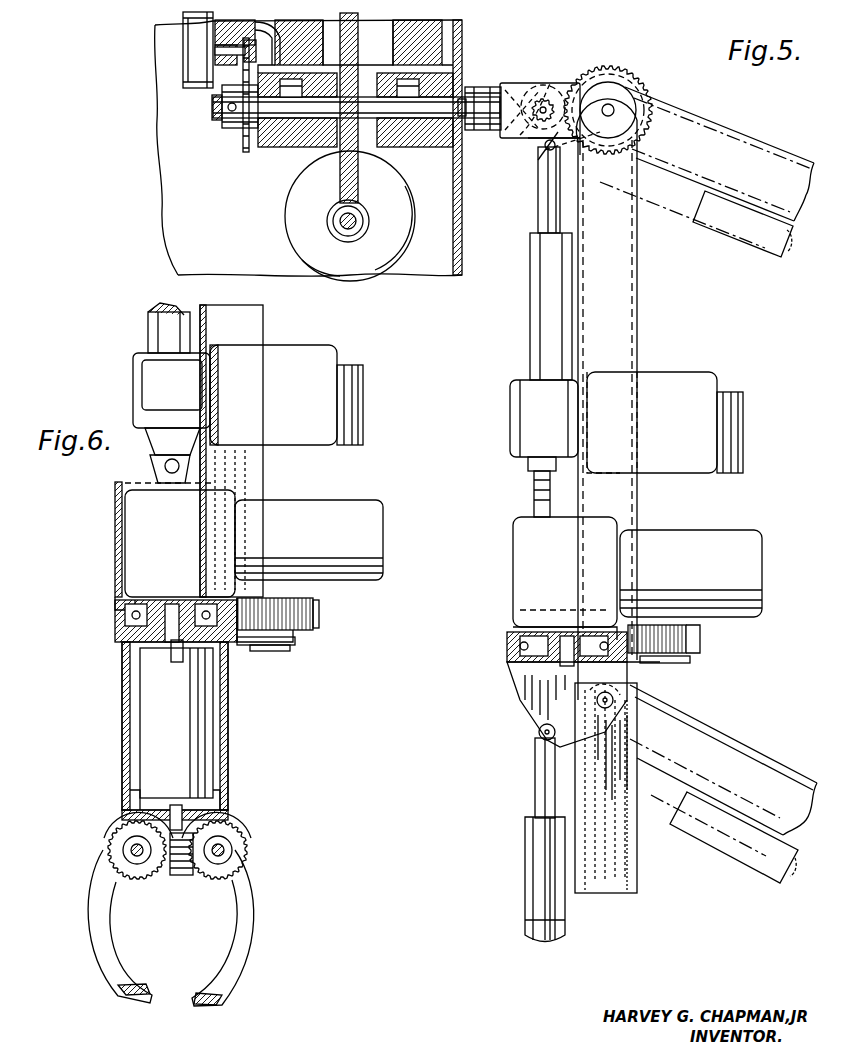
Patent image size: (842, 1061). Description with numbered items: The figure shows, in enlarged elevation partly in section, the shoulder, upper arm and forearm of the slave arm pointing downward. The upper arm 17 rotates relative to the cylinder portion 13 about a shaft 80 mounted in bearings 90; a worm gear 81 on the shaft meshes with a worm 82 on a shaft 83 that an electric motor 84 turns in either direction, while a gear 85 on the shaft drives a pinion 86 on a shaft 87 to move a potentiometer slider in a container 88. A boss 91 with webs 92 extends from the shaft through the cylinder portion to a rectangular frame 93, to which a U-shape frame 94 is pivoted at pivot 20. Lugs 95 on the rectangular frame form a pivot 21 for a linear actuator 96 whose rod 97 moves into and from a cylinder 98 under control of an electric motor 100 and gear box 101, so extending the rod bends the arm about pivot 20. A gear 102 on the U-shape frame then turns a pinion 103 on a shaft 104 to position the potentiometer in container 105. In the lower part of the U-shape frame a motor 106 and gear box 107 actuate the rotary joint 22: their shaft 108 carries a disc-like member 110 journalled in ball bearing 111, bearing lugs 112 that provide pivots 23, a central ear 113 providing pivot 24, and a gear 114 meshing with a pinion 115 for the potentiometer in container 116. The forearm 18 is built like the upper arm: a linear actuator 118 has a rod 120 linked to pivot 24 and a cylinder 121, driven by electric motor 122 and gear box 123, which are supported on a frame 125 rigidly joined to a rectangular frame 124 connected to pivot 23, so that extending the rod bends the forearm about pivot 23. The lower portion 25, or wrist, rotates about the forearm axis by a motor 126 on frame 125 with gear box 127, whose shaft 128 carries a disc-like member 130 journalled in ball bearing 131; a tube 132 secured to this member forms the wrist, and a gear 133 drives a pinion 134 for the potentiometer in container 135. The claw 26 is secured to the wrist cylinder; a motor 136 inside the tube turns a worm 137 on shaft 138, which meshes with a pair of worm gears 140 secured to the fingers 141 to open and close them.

In FIG. 5, the cylinder portion 13 is at (466, 30).
In FIG. 5, the upper arm 17 is at (650, 303).
In FIG. 5, the forearm 18 is at (516, 895).
In FIG. 6, the forearm 18 is at (124, 371).
In FIG. 5, the pivot 20 is at (614, 108).
In FIG. 5, the pivot 21 is at (548, 152).
In FIG. 5, the rotary joint 22 is at (494, 660).
In FIG. 5, the pivots 23 is at (614, 700).
In FIG. 5, the pivot 24 is at (538, 732).
In FIG. 6, the lower portion of the forearm 25 is at (243, 745).
In FIG. 6, the claw 26 is at (270, 913).
In FIG. 5, the shaft 80 is at (305, 140).
In FIG. 5, the worm gear 81 is at (358, 170).
In FIG. 5, the worm 82 is at (366, 218).
In FIG. 5, the shaft 83 is at (356, 226).
In FIG. 5, the electric motor 84 is at (392, 261).
In FIG. 5, the gear 85 is at (244, 140).
In FIG. 5, the pinion 86 is at (250, 30).
In FIG. 5, the shaft 87 is at (240, 12).
In FIG. 5, the container 88 is at (183, 15).
In FIG. 5, the bearings 90 is at (320, 147).
In FIG. 5, the boss 91 is at (462, 118).
In FIG. 5, the webs 92 is at (476, 92).
In FIG. 5, the rectangular frame 93 is at (527, 95).
In FIG. 5, the U-shape frame 94 is at (745, 103).
In FIG. 5, the lugs 95 is at (540, 158).
In FIG. 5, the linear actuator 96 is at (522, 310).
In FIG. 5, the rod 97 is at (538, 210).
In FIG. 5, the cylinder 98 is at (758, 240).
In FIG. 5, the electric motor 100 is at (743, 400).
In FIG. 5, the gear box 101 is at (718, 356).
In FIG. 5, the gear 102 is at (630, 42).
In FIG. 5, the pinion 103 is at (550, 98).
In FIG. 5, the shaft 104 is at (540, 145).
In FIG. 5, the container 105 is at (548, 86).
In FIG. 5, the motor 106 is at (691, 573).
In FIG. 5, the gear box 107 is at (565, 572).
In FIG. 5, the shaft 108 is at (558, 627).
In FIG. 5, the disc-like member 110 is at (520, 668).
In FIG. 5, the ball bearing 111 is at (505, 639).
In FIG. 5, the ears or lugs 112 is at (632, 716).
In FIG. 5, the ear 113 is at (520, 690).
In FIG. 5, the gear 114 is at (640, 667).
In FIG. 5, the pinion 115 is at (690, 662).
In FIG. 5, the container 116 is at (700, 634).
In FIG. 5, the linear actuator 118 is at (518, 839).
In FIG. 5, the rod 120 is at (535, 770).
In FIG. 5, the cylinder 121 is at (565, 906).
In FIG. 6, the cylinder 121 is at (148, 330).
In FIG. 6, the electric motor 122 is at (363, 375).
In FIG. 6, the gear box 123 is at (325, 360).
In FIG. 5, the frame 124 is at (758, 752).
In FIG. 6, the frame 124 is at (263, 318).
In FIG. 6, the frame 125 is at (115, 497).
In FIG. 6, the motor 126 is at (309, 540).
In FIG. 6, the gear box 127 is at (218, 525).
In FIG. 6, the shaft 128 is at (130, 603).
In FIG. 6, the disc-like member 130 is at (158, 643).
In FIG. 6, the ball bearing 131 is at (250, 614).
In FIG. 6, the tube 132 is at (122, 720).
In FIG. 6, the gear 133 is at (250, 645).
In FIG. 6, the pinion 134 is at (292, 650).
In FIG. 6, the container 135 is at (319, 605).
In FIG. 6, the motor 136 is at (176, 723).
In FIG. 6, the worm 137 is at (180, 876).
In FIG. 6, the shaft 138 is at (180, 805).
In FIG. 6, the worm gears 140 is at (132, 873).
In FIG. 6, the fingers 141 is at (113, 955).